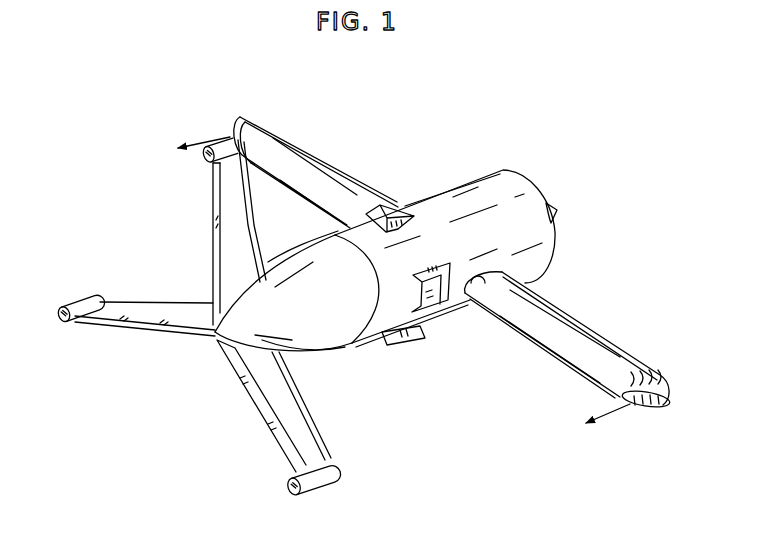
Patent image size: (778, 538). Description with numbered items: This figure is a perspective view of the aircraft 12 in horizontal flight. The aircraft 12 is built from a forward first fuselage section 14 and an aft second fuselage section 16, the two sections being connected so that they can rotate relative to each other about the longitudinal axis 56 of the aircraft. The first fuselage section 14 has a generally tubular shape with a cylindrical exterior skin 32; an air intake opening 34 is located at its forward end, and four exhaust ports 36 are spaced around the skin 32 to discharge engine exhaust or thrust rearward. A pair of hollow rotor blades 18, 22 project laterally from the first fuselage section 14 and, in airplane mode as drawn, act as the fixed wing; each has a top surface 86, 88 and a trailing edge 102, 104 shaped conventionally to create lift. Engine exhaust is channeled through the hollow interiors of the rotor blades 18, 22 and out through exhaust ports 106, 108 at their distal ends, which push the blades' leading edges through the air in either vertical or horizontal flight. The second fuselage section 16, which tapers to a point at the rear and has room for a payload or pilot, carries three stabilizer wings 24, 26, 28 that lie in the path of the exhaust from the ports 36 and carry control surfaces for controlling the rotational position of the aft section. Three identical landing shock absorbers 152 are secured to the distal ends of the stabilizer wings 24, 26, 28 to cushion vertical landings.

The aircraft 12 is at (504, 106).
The first fuselage section 14 is at (492, 203).
The second fuselage section 16 is at (337, 326).
The rotor blade 18 is at (337, 176).
The rotor blade 22 is at (585, 336).
The stabilizer wing 24 is at (230, 222).
The stabilizer wing 26 is at (158, 312).
The stabilizer wing 28 is at (290, 405).
The cylindrical exterior skin 32 is at (450, 206).
The air intake opening 34 is at (559, 237).
The exhaust ports 36 is at (387, 212).
The longitudinal axis 56 is at (355, 534).
The top surface 86 is at (284, 151).
The top surface 88 is at (640, 365).
The trailing edge 102 is at (310, 189).
The trailing edge 104 is at (570, 361).
The exhaust port 106 is at (230, 122).
The exhaust port 108 is at (647, 409).
The landing shock absorbers 152 is at (226, 129).